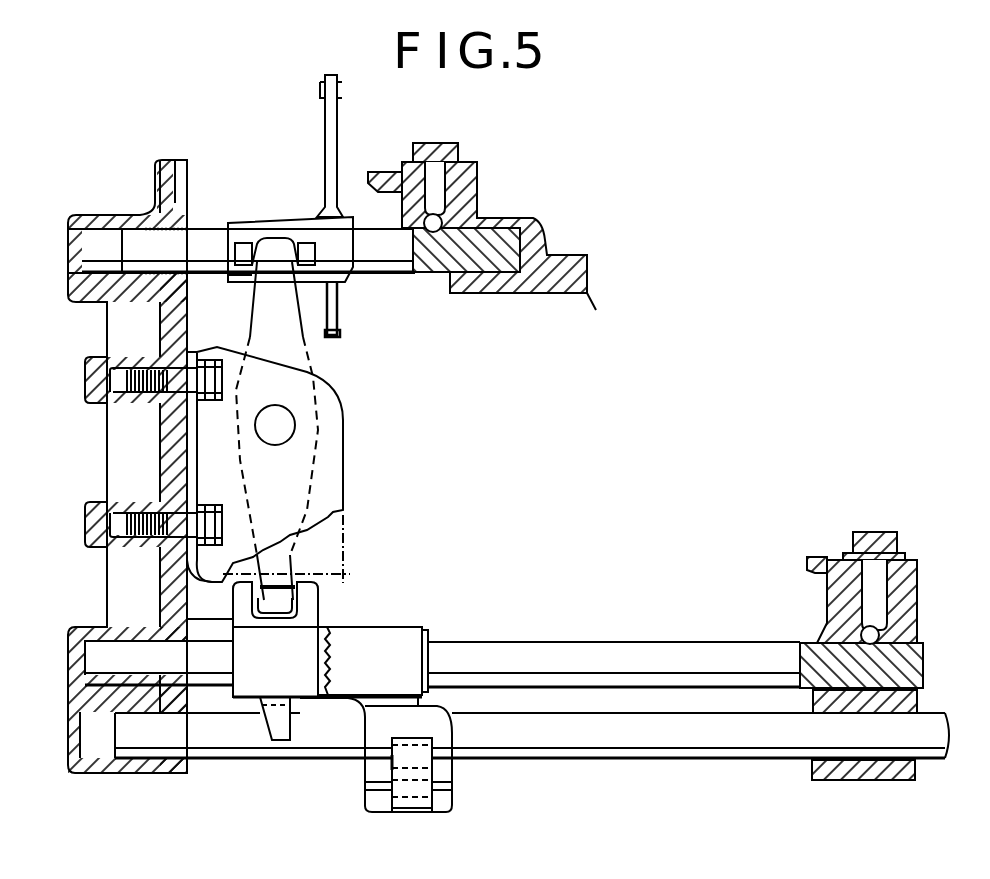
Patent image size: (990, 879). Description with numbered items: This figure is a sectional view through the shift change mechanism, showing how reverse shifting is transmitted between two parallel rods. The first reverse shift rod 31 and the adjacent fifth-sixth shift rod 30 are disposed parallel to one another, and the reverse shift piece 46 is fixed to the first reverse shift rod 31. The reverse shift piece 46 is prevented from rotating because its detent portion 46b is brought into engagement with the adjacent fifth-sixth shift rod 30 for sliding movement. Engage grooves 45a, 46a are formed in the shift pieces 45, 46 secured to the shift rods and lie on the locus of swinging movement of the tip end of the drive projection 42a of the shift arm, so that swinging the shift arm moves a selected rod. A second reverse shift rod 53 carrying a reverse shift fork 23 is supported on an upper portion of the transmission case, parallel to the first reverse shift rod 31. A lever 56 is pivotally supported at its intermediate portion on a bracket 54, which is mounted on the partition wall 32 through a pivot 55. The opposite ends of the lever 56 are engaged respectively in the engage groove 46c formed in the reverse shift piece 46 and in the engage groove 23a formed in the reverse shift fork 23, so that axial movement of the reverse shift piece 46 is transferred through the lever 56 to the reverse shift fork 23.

The reverse shift fork 23 is at (320, 128).
The engage groove 23a is at (260, 250).
The second reverse shift rod 53 is at (390, 265).
The lever 56 is at (252, 327).
The bracket 54 is at (335, 445).
The pivot 55 is at (273, 440).
The partition wall 32 is at (157, 583).
The engage groove 46c is at (307, 575).
The reverse shift piece 46 is at (393, 623).
The first reverse shift rod 31 is at (500, 648).
The fifth-sixth shift rod 30 is at (517, 742).
The engage groove 46a is at (398, 762).
The detent portion 46b is at (267, 737).
The engage groove 45a is at (397, 793).
The drive projection 42a is at (400, 808).
The shift piece 45 is at (458, 808).